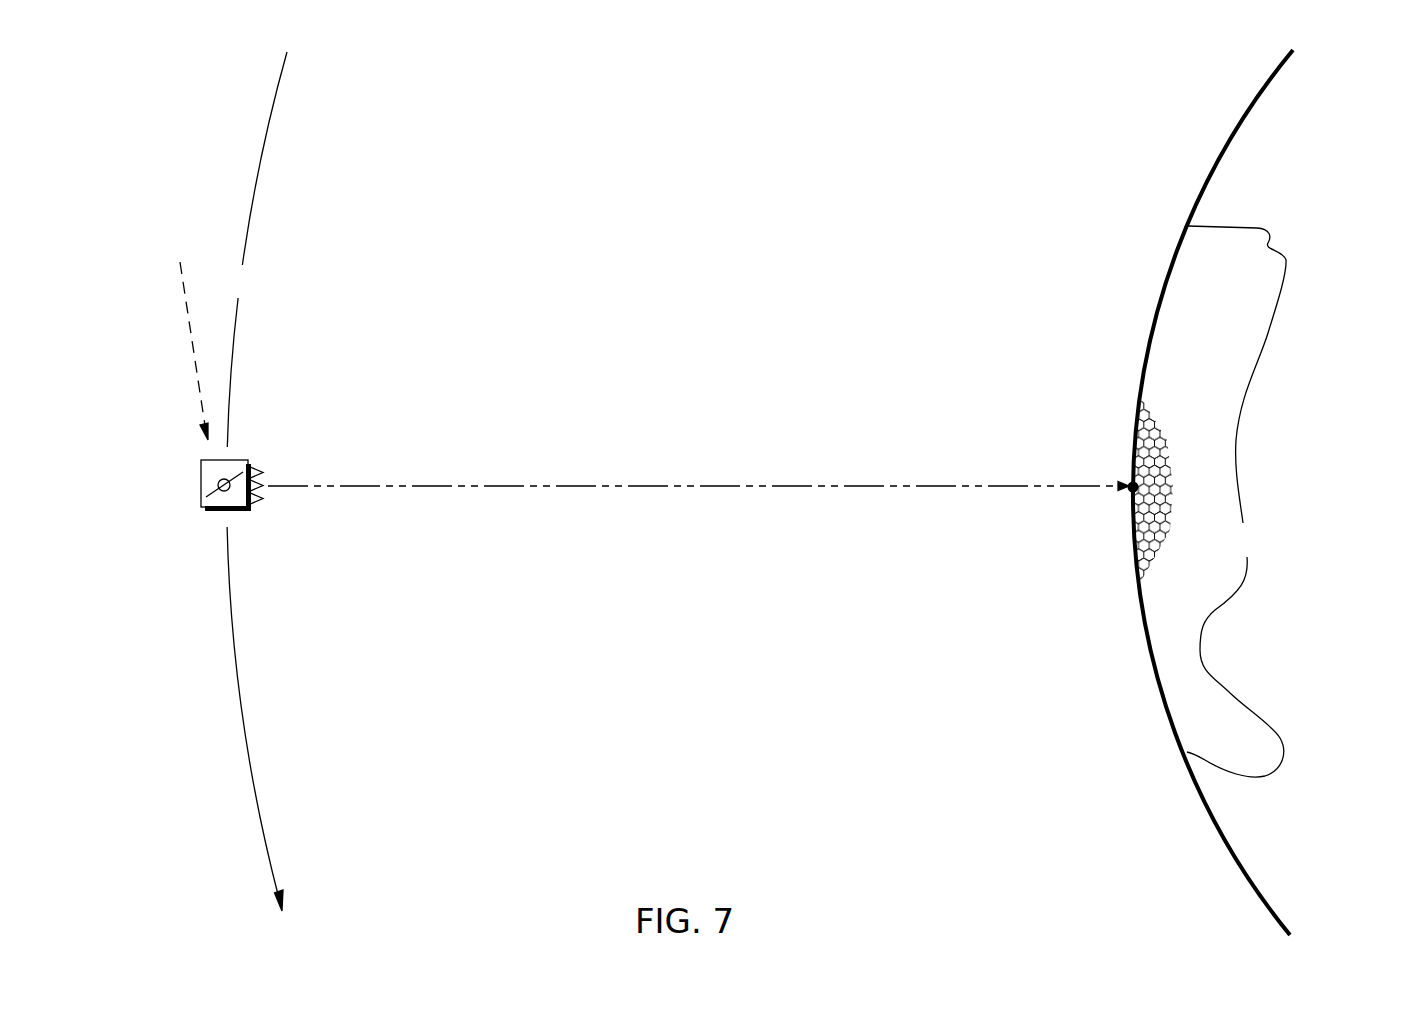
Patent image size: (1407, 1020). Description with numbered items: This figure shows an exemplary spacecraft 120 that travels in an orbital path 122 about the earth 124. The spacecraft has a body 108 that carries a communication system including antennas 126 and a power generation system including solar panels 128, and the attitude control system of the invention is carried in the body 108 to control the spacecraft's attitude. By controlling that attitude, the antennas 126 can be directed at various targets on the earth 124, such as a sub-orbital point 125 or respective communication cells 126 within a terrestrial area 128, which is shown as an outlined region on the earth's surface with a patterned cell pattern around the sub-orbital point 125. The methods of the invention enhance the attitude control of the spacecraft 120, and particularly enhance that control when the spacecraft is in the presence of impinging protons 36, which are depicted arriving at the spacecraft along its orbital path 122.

The impinging protons 36 is at (196, 351).
The body 108 is at (201, 480).
The spacecraft 120 is at (260, 530).
The orbital path 122 is at (256, 481).
The earth 124 is at (1231, 140).
The sub-orbital point 125 is at (1125, 497).
The antennas 126 is at (264, 468).
The solar panels 128 is at (237, 470).